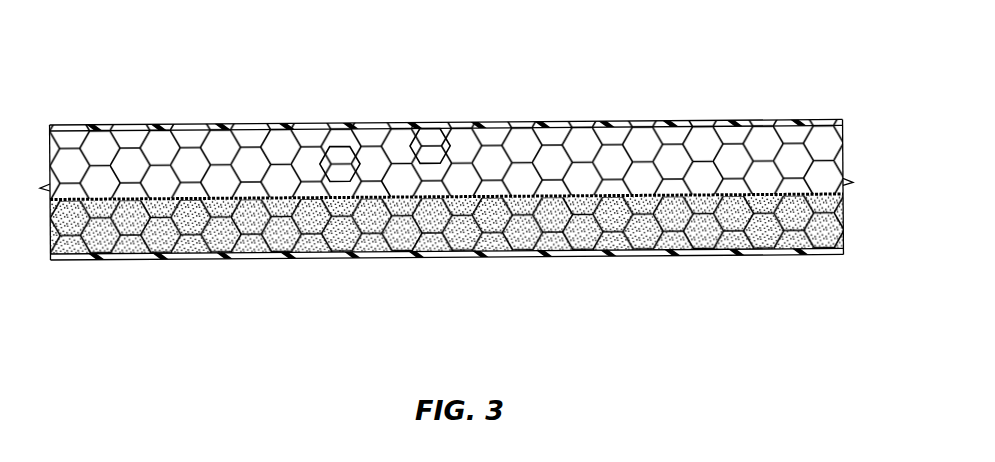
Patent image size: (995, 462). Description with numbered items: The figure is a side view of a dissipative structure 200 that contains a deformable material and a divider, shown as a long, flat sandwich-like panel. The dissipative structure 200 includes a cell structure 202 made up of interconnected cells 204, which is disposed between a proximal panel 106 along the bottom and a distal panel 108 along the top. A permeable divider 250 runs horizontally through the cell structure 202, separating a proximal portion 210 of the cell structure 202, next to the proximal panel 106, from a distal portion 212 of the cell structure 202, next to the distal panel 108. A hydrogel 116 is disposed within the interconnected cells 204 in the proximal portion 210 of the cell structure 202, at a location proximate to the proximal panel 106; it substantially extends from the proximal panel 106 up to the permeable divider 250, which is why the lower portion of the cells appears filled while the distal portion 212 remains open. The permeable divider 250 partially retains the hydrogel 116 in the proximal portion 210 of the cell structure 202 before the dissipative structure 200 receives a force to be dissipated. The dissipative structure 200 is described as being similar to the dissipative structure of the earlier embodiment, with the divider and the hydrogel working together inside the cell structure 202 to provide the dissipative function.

The dissipative structure 200 is at (447, 135).
The cell structure 202 is at (446, 159).
The distal panel 108 is at (446, 125).
The distal portion of the cell structure 212 is at (446, 159).
The interconnected cells 204 is at (385, 154).
The permeable divider 250 is at (446, 197).
The proximal portion of the cell structure 210 is at (446, 224).
The hydrogel 116 is at (446, 227).
The proximal panel 106 is at (446, 254).